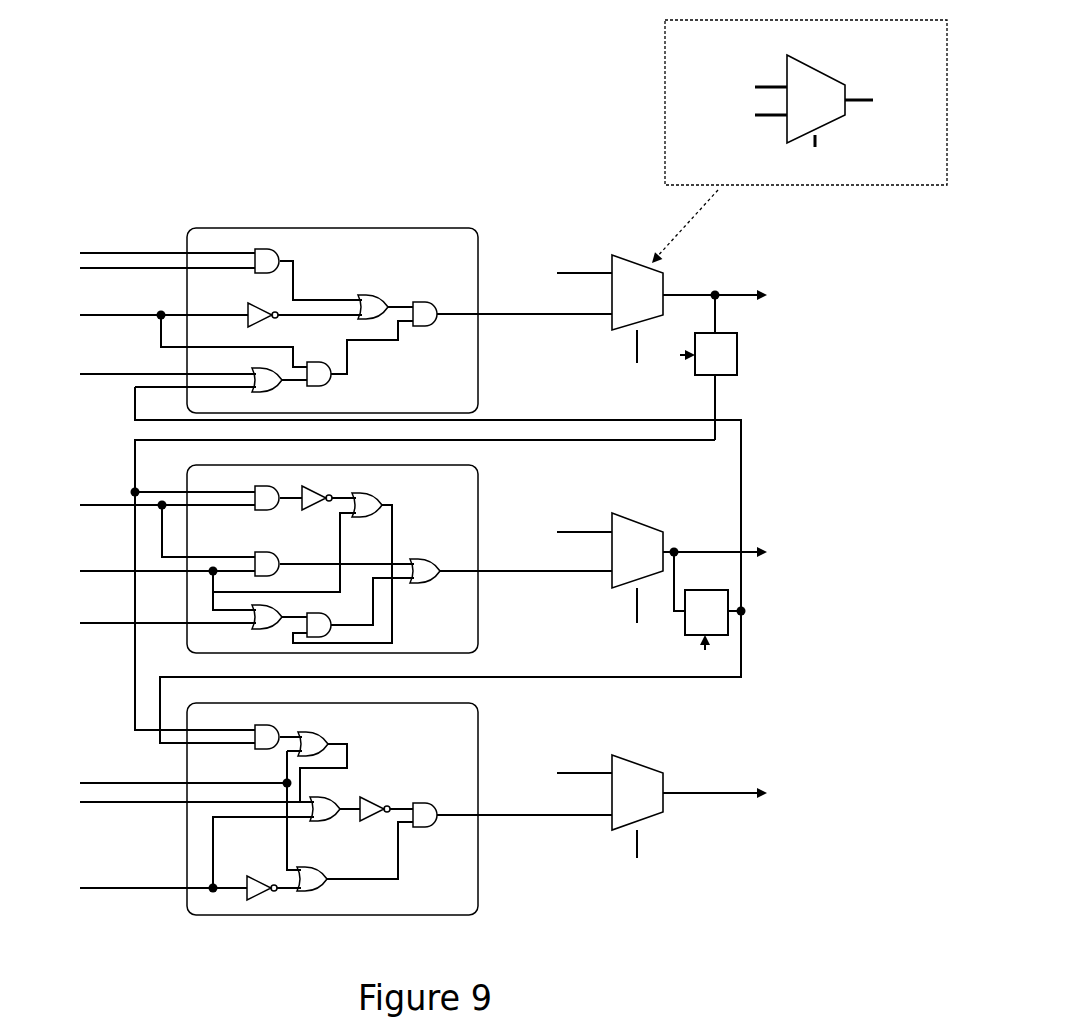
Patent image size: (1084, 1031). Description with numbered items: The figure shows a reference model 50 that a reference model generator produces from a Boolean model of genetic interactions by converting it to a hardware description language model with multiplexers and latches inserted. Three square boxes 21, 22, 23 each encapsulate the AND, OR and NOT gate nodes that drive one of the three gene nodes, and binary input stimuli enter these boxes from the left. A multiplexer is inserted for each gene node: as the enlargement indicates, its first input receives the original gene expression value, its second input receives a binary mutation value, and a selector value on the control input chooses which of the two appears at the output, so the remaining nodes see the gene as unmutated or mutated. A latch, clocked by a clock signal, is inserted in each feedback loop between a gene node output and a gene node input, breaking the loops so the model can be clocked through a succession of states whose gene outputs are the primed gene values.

The reference model 50 is at (150, 155).
The square box 21 is at (346, 314).
The square box 22 is at (346, 555).
The square box 23 is at (346, 805).